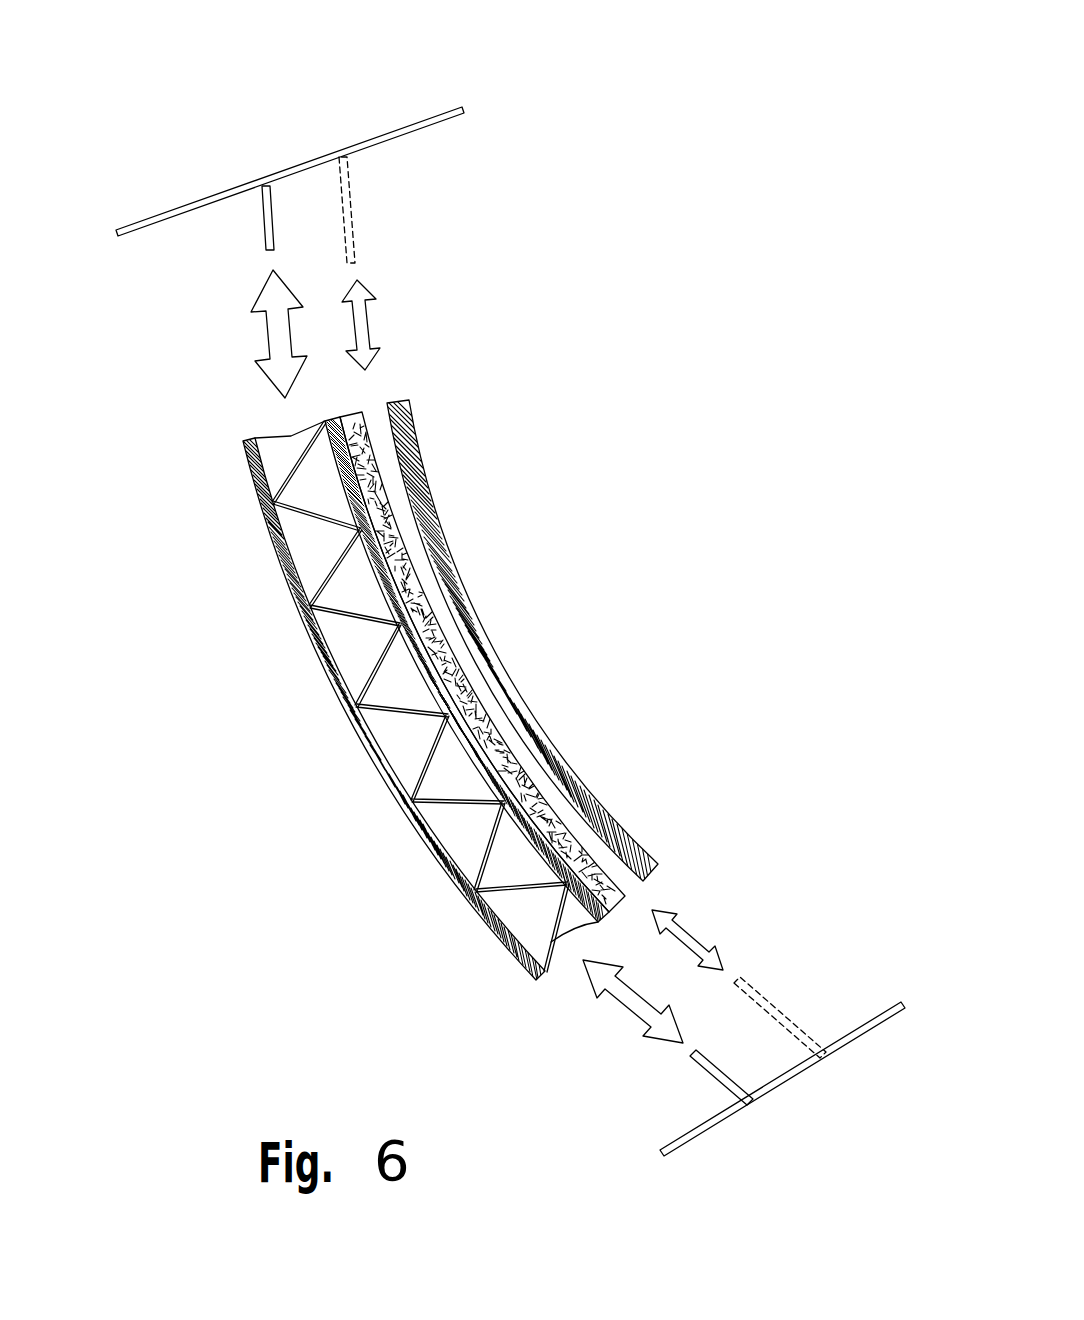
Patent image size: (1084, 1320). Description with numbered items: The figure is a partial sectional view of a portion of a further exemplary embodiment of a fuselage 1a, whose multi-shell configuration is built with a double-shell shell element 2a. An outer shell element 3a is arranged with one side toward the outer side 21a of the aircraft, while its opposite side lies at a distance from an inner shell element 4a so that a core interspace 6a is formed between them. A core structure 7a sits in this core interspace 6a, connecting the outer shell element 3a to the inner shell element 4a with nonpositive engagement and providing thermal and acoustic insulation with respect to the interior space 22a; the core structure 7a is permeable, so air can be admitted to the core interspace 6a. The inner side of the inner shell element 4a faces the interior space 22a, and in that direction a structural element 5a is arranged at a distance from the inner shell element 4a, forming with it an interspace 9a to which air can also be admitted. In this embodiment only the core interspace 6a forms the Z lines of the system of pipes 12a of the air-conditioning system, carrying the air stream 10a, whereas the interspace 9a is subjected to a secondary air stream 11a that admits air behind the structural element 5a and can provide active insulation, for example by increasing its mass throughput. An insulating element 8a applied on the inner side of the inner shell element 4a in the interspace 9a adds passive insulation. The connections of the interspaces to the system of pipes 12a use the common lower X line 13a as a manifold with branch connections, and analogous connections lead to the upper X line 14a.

The fuselage 1a is at (237, 838).
The shell element 2a is at (229, 485).
The outer shell element 3a is at (281, 567).
The inner shell element 4a is at (373, 474).
The structural element 5a is at (557, 738).
The core interspace 6a is at (348, 645).
The core structure 7a is at (413, 757).
The insulating element 8a is at (455, 672).
The interspace 9a is at (417, 563).
The air stream 10a is at (277, 332).
The secondary air stream 11a is at (363, 326).
The system of pipes 12a is at (284, 140).
The lower X line 13a is at (703, 1131).
The upper X line 14a is at (173, 210).
The outer side 21a is at (176, 765).
The interior space 22a is at (663, 571).